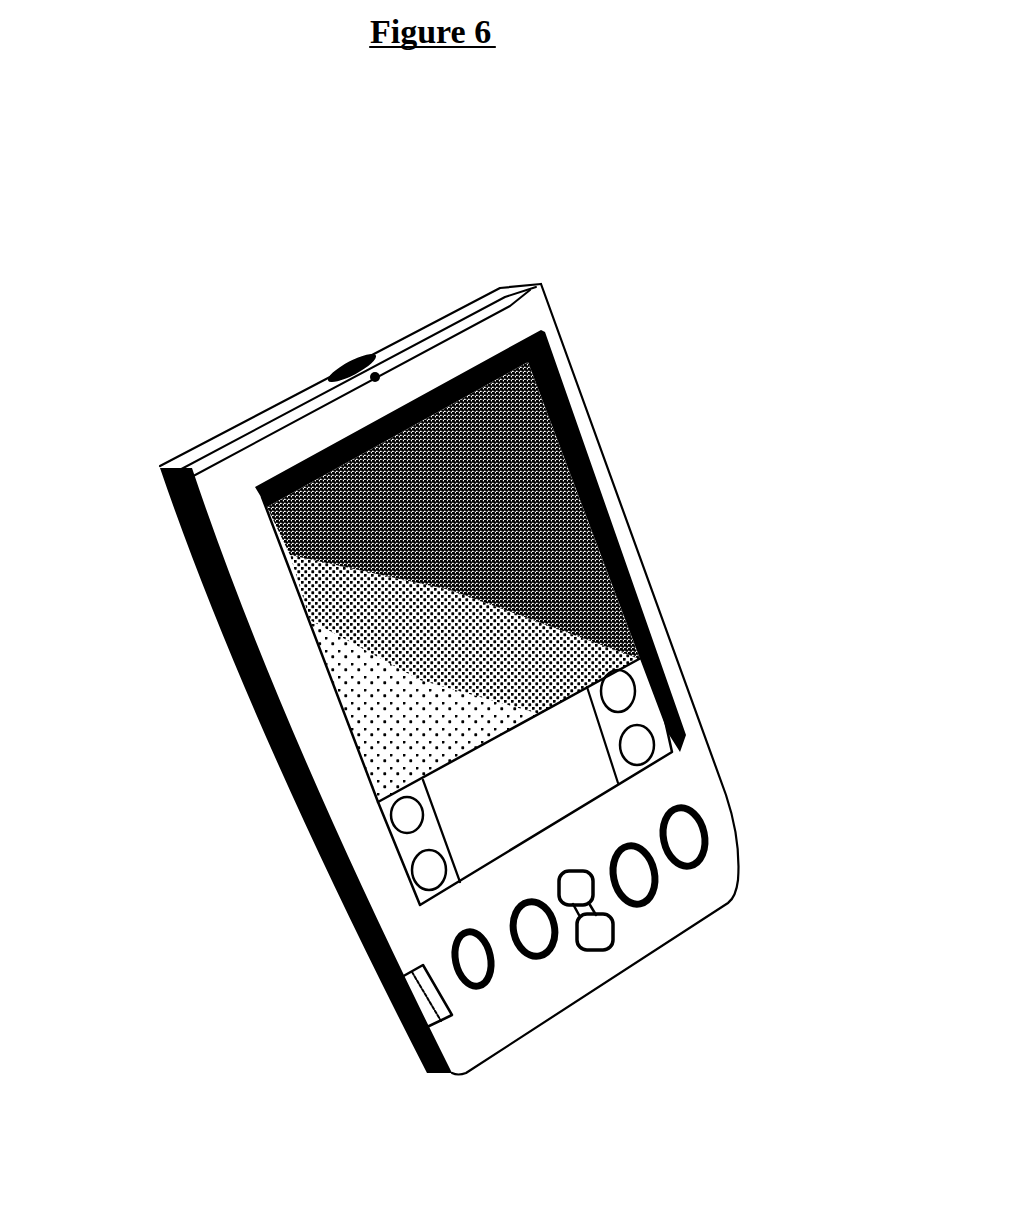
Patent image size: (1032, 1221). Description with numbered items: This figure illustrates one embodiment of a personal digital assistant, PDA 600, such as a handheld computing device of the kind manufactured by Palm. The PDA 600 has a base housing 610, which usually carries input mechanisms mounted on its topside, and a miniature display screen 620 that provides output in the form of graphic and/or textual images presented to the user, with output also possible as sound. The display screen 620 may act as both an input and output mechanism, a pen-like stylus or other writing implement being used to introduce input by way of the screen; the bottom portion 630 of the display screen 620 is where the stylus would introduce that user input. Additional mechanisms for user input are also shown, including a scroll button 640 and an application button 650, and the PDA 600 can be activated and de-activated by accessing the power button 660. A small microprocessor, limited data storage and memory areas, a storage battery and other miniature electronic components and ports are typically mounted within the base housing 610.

The PDA 600 is at (543, 283).
The base housing 610 is at (357, 363).
The display screen 620 is at (455, 597).
The bottom portion of display screen 630 is at (517, 785).
The scroll button 640 is at (597, 880).
The application button 650 is at (497, 957).
The power button 660 is at (363, 968).